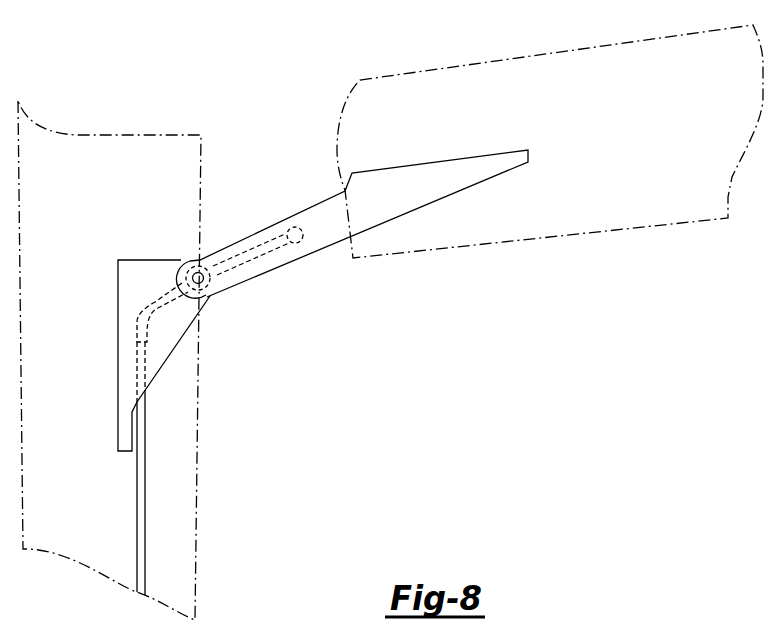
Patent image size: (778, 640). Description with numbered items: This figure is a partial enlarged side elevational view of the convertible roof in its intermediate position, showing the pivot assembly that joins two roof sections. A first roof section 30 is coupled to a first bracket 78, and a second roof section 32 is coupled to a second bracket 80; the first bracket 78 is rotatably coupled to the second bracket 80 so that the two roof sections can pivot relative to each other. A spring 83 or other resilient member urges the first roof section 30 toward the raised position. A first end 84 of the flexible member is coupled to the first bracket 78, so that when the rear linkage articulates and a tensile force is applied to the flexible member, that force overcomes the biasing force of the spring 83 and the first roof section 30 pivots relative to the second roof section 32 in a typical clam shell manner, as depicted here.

The first roof section 30 is at (600, 120).
The second roof section 32 is at (63, 189).
The first bracket 78 is at (483, 172).
The second bracket 80 is at (125, 298).
The spring 83 is at (184, 264).
The first end 84 is at (297, 217).